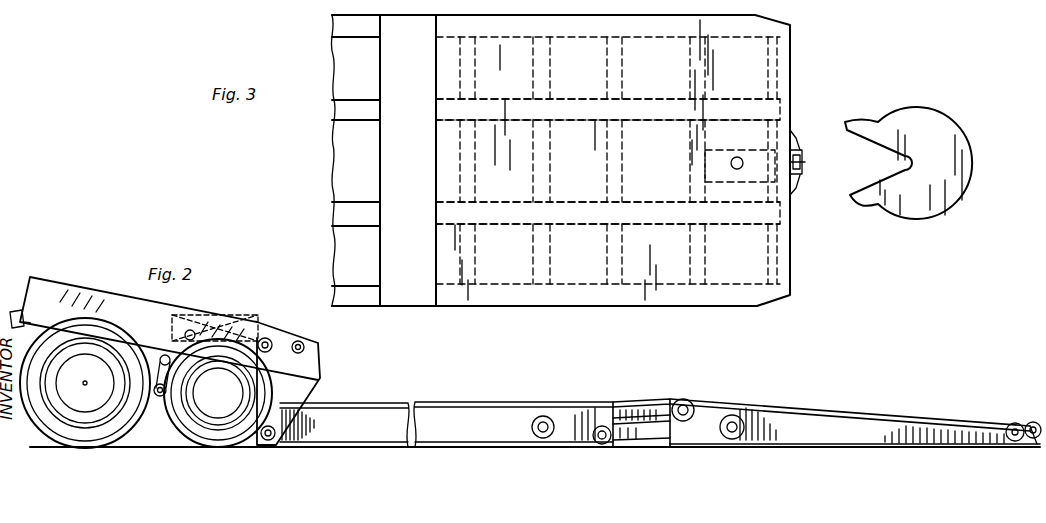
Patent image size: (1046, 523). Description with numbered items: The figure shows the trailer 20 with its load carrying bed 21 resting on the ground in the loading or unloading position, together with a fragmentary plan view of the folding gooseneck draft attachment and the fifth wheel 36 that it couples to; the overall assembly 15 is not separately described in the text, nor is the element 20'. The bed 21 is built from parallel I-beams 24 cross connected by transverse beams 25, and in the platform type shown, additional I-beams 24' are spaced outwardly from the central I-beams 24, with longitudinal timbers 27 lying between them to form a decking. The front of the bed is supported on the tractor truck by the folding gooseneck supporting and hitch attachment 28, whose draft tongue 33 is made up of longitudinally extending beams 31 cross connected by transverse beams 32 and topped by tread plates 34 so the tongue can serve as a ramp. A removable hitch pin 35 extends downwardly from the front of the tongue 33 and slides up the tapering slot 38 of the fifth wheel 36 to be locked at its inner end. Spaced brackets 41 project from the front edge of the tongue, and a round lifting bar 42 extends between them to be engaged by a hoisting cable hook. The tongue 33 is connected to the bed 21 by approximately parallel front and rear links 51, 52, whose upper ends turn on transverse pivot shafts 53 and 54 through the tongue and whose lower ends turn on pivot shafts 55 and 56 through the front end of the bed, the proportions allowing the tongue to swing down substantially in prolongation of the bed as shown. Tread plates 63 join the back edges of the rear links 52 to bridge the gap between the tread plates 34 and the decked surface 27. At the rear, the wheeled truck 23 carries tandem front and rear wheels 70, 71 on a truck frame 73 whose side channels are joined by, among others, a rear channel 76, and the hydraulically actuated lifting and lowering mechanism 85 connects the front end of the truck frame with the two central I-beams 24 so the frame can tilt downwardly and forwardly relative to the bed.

In FIG. 3, the trailer 15 is at (110, 5).
In FIG. 2, the trailer 20 is at (408, 356).
In FIG. 3, the cross frame member 20' is at (331, 282).
In FIG. 2, the load carrying bed 21 is at (530, 402).
In FIG. 2, the wheeled truck 23 is at (118, 289).
In FIG. 3, the I-beams 24 is at (331, 161).
In FIG. 2, the I-beams 24 is at (344, 425).
In FIG. 3, the additional I-beams 24' is at (329, 26).
In FIG. 3, the transverse beams 25 is at (412, 46).
In FIG. 3, the longitudinal timbers 27 is at (362, 58).
In FIG. 3, the folding gooseneck supporting and hitch attachment 28 is at (612, 20).
In FIG. 2, the folding gooseneck supporting and hitch attachment 28 is at (874, 412).
In FIG. 3, the longitudinally extending beams 31 is at (672, 24).
In FIG. 2, the longitudinally extending beams 31 is at (828, 427).
In FIG. 3, the transverse beams 32 is at (607, 75).
In FIG. 2, the draft tongue 33 is at (930, 420).
In FIG. 3, the tread plates 34 is at (505, 60).
In FIG. 2, the tread plates 34 is at (798, 408).
In FIG. 3, the hitch pin 35 is at (708, 160).
In FIG. 3, the fifth wheel 36 is at (910, 132).
In FIG. 3, the tapering slot 38 is at (856, 179).
In FIG. 3, the brackets 41 is at (798, 142).
In FIG. 2, the brackets 41 is at (1012, 424).
In FIG. 3, the lifting bar 42 is at (806, 162).
In FIG. 2, the lifting bar 42 is at (1033, 421).
In FIG. 2, the front links 51 is at (648, 440).
In FIG. 2, the rear links 52 is at (648, 416).
In FIG. 2, the pivot shaft 53 is at (732, 416).
In FIG. 2, the pivot shaft 54 is at (686, 400).
In FIG. 2, the pivot shaft 55 is at (598, 444).
In FIG. 2, the pivot shaft 56 is at (531, 428).
In FIG. 2, the tread plates 63 is at (624, 402).
In FIG. 2, the front wheels 70 is at (220, 445).
In FIG. 2, the rear wheels 71 is at (93, 444).
In FIG. 2, the truck frame 73 is at (52, 283).
In FIG. 2, the rear channel 76 is at (22, 308).
In FIG. 2, the hydraulically actuated lifting and lowering mechanism 85 is at (298, 340).